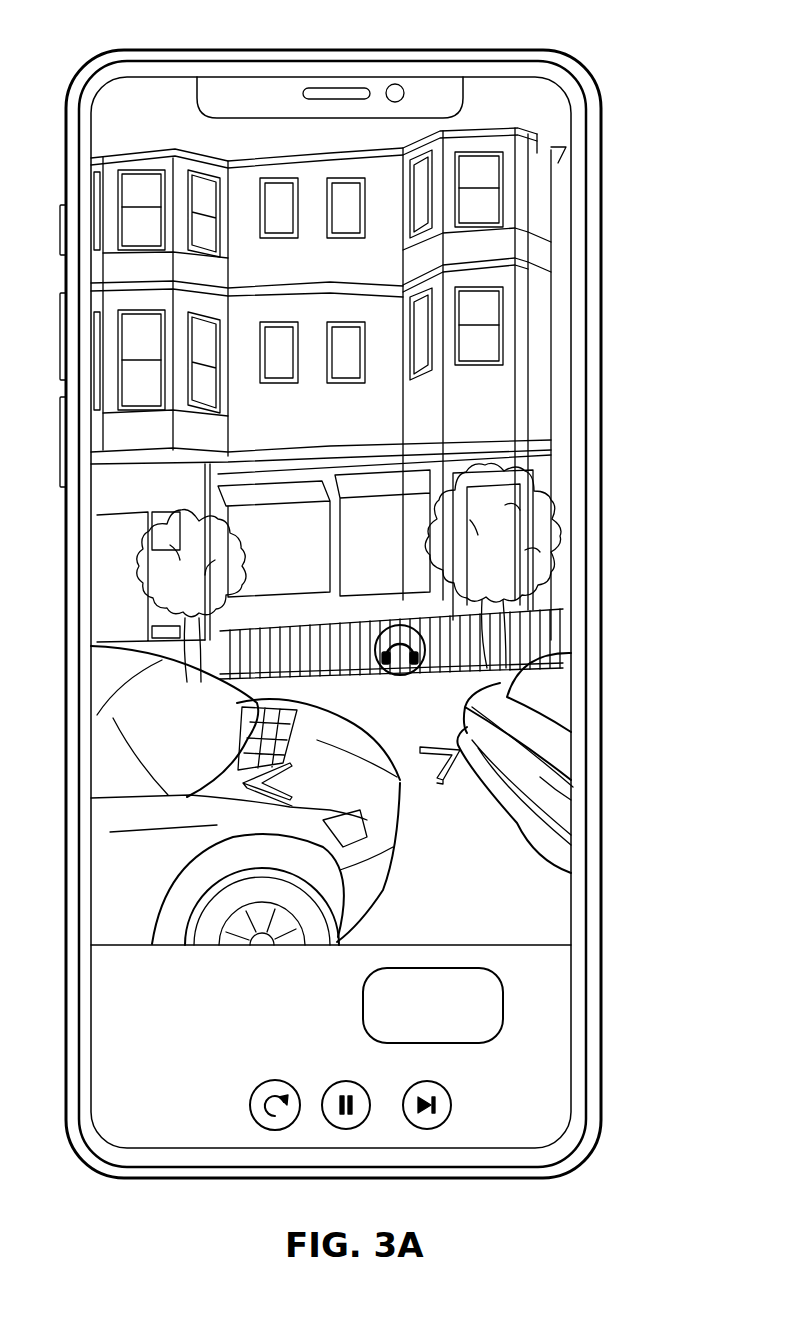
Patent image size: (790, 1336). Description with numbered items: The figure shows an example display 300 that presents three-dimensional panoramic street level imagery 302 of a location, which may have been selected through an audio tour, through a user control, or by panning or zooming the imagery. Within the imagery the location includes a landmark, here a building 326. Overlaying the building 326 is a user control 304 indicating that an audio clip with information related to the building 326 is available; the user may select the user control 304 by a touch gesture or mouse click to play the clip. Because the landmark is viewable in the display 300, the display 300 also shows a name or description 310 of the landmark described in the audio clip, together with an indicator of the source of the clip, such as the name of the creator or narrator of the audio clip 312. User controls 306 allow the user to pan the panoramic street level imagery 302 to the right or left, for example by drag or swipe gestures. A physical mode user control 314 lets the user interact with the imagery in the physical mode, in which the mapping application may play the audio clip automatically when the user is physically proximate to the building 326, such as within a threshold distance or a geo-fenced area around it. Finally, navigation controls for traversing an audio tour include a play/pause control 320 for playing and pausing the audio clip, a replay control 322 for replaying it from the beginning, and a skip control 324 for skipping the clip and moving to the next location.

The display 300 is at (360, 34).
The 3D panoramic street level imagery 302 is at (572, 198).
The building 326 is at (540, 332).
The user control 304 is at (425, 652).
The user controls for panning 306 is at (565, 823).
The name or description of the landmark 310 is at (242, 996).
The name of the creator or narrator of the audio clip 312 is at (287, 1038).
The physical mode user control 314 is at (505, 1003).
The play/pause control 320 is at (371, 1107).
The replay control 322 is at (252, 1098).
The skip control 324 is at (452, 1103).